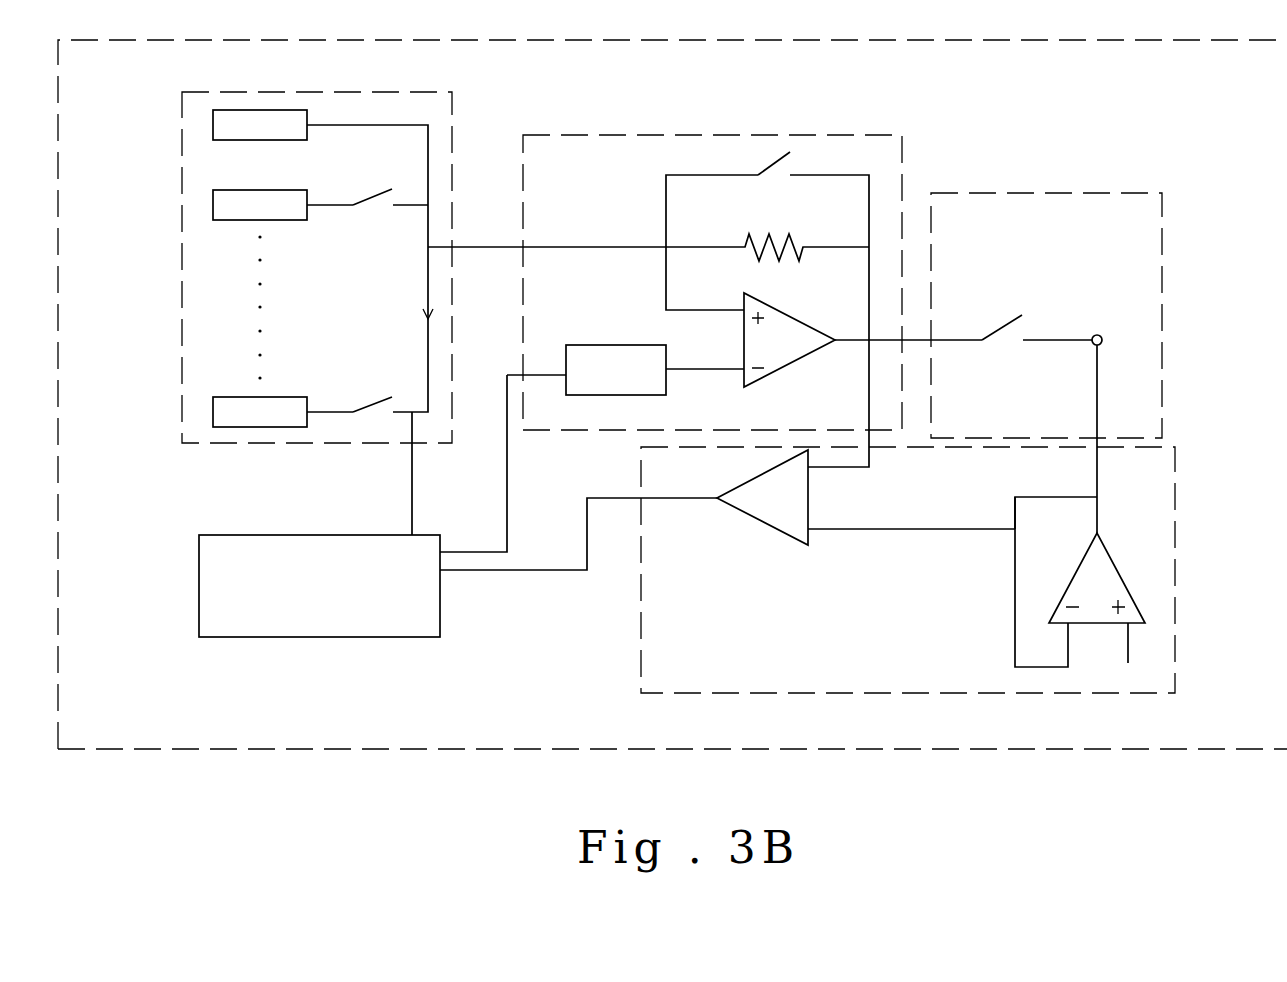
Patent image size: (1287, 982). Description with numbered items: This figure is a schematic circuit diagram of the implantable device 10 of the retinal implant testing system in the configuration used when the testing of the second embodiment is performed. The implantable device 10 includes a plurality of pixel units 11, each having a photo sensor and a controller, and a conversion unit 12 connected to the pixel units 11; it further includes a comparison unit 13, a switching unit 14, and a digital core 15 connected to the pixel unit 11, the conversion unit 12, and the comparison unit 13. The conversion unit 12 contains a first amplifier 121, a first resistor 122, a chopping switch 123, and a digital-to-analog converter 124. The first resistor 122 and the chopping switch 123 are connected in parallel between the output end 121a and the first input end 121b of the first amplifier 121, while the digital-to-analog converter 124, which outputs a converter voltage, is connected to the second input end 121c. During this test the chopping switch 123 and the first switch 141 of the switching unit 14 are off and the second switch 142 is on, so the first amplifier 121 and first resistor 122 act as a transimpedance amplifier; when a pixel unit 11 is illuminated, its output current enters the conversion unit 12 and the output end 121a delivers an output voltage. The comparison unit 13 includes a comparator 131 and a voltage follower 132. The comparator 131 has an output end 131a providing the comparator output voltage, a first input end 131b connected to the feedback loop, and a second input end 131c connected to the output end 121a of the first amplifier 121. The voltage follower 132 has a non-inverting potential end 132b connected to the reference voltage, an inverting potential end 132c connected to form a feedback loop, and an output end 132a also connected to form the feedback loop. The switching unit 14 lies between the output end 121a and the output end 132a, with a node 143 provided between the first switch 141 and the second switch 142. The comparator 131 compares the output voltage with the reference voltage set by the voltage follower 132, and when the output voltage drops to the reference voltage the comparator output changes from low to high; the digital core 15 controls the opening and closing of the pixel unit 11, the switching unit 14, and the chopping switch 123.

The implantable device 10 is at (193, 40).
The pixel unit 11 is at (220, 128).
The conversion unit 12 is at (695, 135).
The comparison unit 13 is at (641, 610).
The switching unit 14 is at (1068, 193).
The digital core 15 is at (230, 583).
The first amplifier 121 is at (787, 335).
The output end of the first amplifier 121a is at (858, 343).
The first input end of the first amplifier 121b is at (677, 310).
The second input end of the first amplifier 121c is at (677, 369).
The first resistor 122 is at (745, 244).
The chopping switch 123 is at (758, 172).
The digital-to-analog converter 124 is at (572, 345).
The comparator 131 is at (790, 518).
The output end of the comparator 131a is at (657, 498).
The first input end of the comparator 131b is at (822, 531).
The second input end of the comparator 131c is at (820, 469).
The voltage follower 132 is at (1112, 570).
The output end of the voltage follower 132a is at (1098, 517).
The non-inverting potential end of the voltage follower 132b is at (1130, 641).
The inverting potential end of the voltage follower 132c is at (1069, 641).
The first switch 141 is at (1005, 318).
The second switch 142 is at (1097, 415).
The node 143 is at (1099, 335).